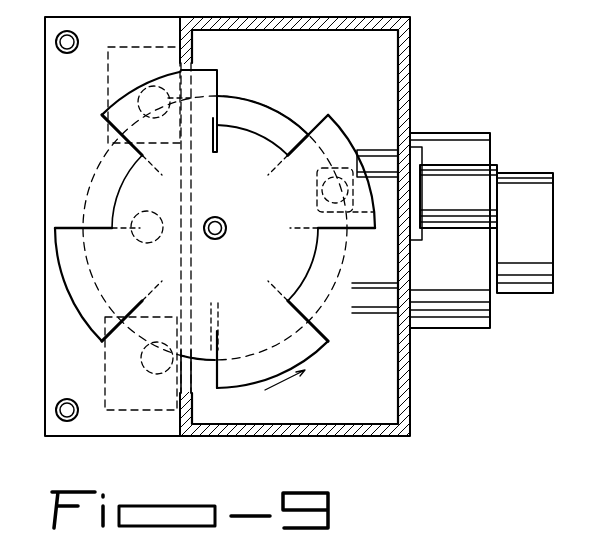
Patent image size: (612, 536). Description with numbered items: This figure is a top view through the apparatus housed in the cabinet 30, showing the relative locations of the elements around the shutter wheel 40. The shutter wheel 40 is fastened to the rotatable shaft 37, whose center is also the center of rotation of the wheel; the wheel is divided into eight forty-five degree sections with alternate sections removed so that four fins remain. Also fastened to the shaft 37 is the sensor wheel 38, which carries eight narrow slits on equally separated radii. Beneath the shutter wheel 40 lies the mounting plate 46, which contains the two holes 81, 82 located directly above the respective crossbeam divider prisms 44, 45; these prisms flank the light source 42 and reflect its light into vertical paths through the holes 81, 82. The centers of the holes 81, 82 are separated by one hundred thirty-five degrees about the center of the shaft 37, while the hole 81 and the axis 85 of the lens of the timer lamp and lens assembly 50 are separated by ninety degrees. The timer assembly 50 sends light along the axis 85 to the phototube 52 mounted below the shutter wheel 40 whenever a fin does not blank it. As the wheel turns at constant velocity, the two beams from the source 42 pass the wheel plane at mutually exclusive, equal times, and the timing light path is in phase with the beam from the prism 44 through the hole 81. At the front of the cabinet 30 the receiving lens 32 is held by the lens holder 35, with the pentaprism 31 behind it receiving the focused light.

The cabinet 30 is at (407, 394).
The pentaprism 31 is at (388, 290).
The lens 32 is at (535, 230).
The lens holder 35 is at (468, 260).
The rotatable shaft 37 is at (218, 220).
The sensor wheel 38 is at (101, 166).
The shutter wheel 40 is at (214, 86).
The light source 42 is at (143, 243).
The crossbeam divider prism 44 is at (113, 94).
The crossbeam divider prism 45 is at (140, 402).
The mounting plate 46 is at (62, 355).
The timer lamp and lens assembly 50 is at (349, 141).
The phototube 52 is at (392, 205).
The hole 81 is at (166, 67).
The hole 82 is at (157, 374).
The axis of the lens of timer assembly 85 is at (328, 197).